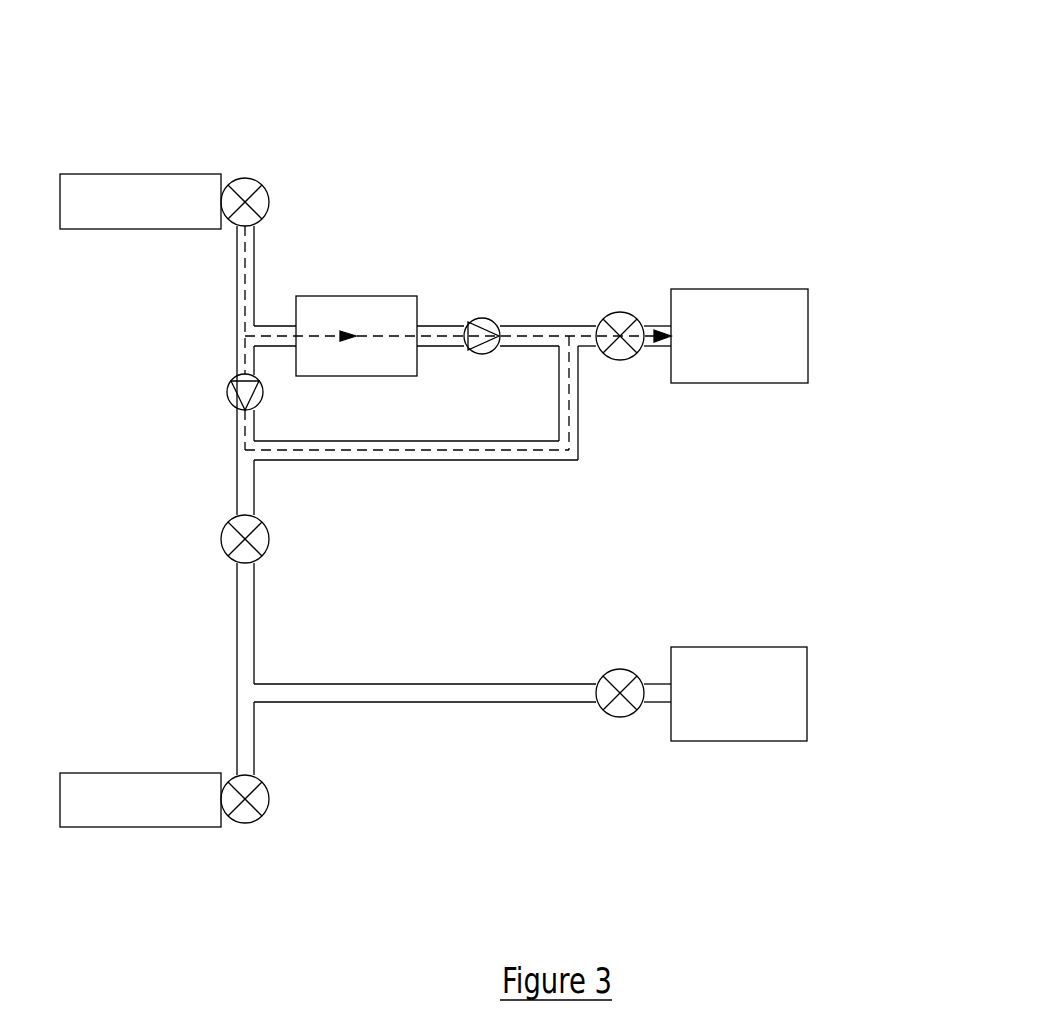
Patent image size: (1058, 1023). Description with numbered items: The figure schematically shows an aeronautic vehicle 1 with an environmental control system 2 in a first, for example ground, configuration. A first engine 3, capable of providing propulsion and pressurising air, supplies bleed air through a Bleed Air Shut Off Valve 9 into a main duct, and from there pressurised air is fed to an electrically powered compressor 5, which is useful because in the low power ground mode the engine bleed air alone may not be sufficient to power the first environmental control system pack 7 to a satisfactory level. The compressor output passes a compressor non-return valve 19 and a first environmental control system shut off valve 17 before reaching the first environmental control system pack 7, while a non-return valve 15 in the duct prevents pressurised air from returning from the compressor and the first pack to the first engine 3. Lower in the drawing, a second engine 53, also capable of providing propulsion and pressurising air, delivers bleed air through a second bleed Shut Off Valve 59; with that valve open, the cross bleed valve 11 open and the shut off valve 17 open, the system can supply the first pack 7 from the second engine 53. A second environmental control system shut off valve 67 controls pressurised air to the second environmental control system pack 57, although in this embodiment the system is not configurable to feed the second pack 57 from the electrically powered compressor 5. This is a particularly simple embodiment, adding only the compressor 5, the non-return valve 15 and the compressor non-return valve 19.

The aeronautic vehicle 1 is at (788, 174).
The environmental control system 2 is at (540, 188).
The first engine 3 is at (102, 230).
The electrically powered compressor 5 is at (338, 296).
The first environmental control system pack 7 is at (753, 384).
The Bleed Air Shut Off Valve 9 is at (253, 178).
The cross bleed valve 11 is at (221, 532).
The non-return valve 15 is at (227, 393).
The first environmental control system shut off valve 17 is at (607, 310).
The compressor non-return valve 19 is at (479, 318).
The second engine 53 is at (140, 773).
The second environmental control system pack 57 is at (750, 647).
The second bleed Shut Off Valve 59 is at (270, 800).
The second environmental control system shut off valve 67 is at (611, 718).